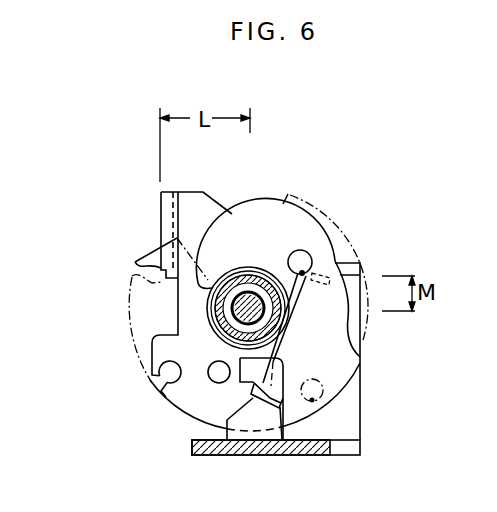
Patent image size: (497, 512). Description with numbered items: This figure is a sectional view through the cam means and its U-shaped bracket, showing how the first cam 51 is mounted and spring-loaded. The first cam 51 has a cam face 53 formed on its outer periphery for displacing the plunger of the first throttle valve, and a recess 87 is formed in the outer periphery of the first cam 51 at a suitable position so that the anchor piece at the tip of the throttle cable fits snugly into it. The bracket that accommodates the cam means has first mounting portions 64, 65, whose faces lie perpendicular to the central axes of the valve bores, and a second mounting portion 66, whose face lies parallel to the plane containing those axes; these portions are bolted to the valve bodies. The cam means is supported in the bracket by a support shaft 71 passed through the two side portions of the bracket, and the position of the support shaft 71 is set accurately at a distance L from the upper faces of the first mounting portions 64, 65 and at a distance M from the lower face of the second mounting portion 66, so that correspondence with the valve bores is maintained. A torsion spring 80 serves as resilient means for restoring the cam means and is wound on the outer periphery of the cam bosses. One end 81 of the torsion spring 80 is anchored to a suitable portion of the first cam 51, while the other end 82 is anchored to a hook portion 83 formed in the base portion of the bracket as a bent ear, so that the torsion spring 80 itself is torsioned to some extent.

The first cam 51 is at (273, 230).
The cam face 53 is at (256, 207).
The first mounting portion 64 is at (160, 212).
The first mounting portion 65 is at (170, 260).
The second mounting portion 66 is at (362, 270).
The support shaft 71 is at (265, 308).
The torsion spring 80 is at (240, 268).
The one end of torsion spring 81 is at (320, 272).
The other end of torsion spring 82 is at (272, 400).
The hook portion 83 is at (252, 420).
The recess 87 is at (170, 373).